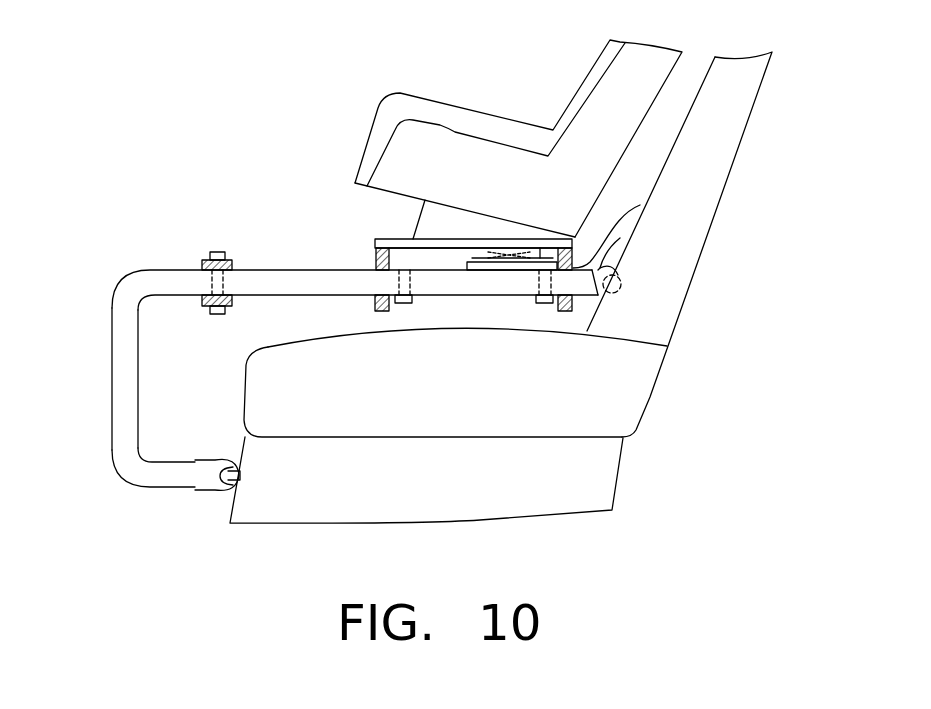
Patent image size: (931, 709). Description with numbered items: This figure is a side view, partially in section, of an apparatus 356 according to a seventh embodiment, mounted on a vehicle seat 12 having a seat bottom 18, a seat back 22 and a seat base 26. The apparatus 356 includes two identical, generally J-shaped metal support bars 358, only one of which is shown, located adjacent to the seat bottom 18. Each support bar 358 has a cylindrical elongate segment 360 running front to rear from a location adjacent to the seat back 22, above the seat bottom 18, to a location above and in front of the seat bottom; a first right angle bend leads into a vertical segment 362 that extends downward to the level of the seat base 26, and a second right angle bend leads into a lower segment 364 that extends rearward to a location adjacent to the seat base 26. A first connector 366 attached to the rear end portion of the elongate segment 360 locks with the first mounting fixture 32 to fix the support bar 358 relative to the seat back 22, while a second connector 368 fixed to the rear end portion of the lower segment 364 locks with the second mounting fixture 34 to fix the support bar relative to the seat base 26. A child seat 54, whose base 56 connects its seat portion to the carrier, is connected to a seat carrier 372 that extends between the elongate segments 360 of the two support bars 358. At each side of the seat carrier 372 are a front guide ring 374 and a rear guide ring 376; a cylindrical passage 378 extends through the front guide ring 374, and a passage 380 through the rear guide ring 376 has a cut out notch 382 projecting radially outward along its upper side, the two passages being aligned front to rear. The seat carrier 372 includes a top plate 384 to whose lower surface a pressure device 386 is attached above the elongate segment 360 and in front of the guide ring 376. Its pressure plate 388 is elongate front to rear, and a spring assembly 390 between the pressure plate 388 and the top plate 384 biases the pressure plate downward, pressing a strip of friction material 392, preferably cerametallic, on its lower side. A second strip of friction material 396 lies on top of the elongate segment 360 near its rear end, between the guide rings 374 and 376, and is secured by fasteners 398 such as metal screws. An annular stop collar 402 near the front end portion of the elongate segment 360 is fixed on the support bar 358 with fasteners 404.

The vehicle seat 12 is at (762, 127).
The seat bottom 18 is at (648, 384).
The seat back 22 is at (728, 178).
The seat base 26 is at (607, 474).
The first mounting fixture 32 is at (630, 281).
The second mounting fixture 34 is at (230, 468).
The child seat 54 is at (555, 100).
The base 56 is at (418, 222).
The apparatus 356 is at (135, 160).
The support bar 358 is at (112, 335).
The elongate segment 360 is at (257, 283).
The vertical segment 362 is at (122, 390).
The lower segment 364 is at (160, 483).
The first connector 366 is at (614, 248).
The second connector 368 is at (217, 456).
The seat carrier 372 is at (350, 225).
The guide ring 374 is at (386, 318).
The guide ring 376 is at (556, 305).
The cylindrical passage 378 is at (385, 300).
The passage 380 is at (575, 296).
The cut out notch 382 is at (632, 213).
The top plate 384 is at (452, 238).
The pressure device 386 is at (550, 232).
The pressure plate 388 is at (478, 239).
The spring assembly 390 is at (522, 239).
The strip of friction material 392 is at (470, 265).
The strip of friction material 396 is at (478, 262).
The fasteners 398 is at (405, 303).
The stop collar 402 is at (203, 264).
The fasteners 404 is at (217, 253).